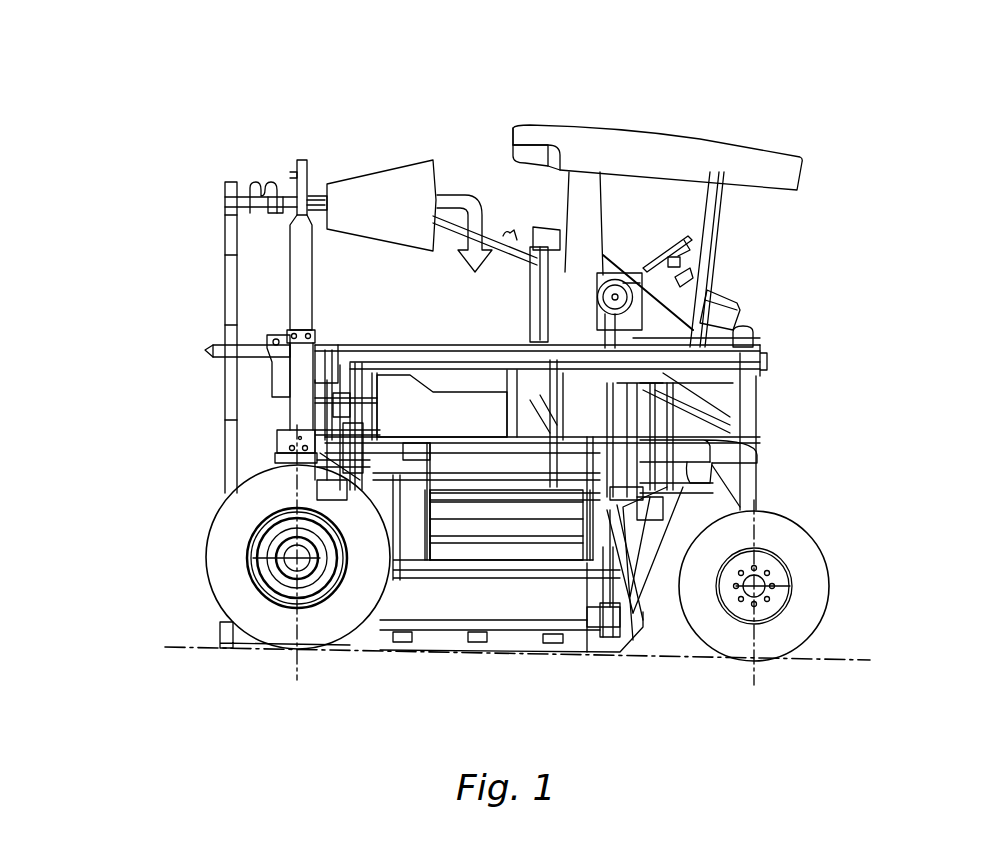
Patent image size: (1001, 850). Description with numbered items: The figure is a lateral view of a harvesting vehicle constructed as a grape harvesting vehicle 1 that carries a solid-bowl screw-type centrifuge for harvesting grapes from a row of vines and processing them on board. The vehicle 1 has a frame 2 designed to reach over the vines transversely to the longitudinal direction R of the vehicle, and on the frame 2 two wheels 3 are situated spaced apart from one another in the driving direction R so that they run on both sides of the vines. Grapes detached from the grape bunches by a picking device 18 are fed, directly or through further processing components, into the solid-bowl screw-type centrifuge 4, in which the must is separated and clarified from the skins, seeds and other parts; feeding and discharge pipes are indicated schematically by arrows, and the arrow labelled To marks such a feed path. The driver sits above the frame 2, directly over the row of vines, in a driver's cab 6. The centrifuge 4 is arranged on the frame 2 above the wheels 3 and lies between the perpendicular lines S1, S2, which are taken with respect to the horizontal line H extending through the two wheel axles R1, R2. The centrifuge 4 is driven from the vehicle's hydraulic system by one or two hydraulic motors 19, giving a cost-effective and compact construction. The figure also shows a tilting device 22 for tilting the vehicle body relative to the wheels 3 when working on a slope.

The grape harvesting vehicle 1 is at (708, 130).
The frame 2 is at (343, 350).
The wheels 3 is at (324, 627).
The solid-bowl screw-type centrifuge 4 is at (440, 386).
The driver's cab 6 is at (700, 248).
The picking device 18 is at (395, 190).
The hydraulic motor 19 is at (762, 390).
The tilting device 22 is at (258, 374).
The perpendicular line S1 is at (297, 502).
The wheel axle R1 is at (290, 559).
The perpendicular line S2 is at (762, 509).
The wheel axle R2 is at (783, 585).
The horizontal line H is at (197, 655).
The longitudinal direction R is at (532, 677).
The discharge direction of hopper To is at (459, 297).